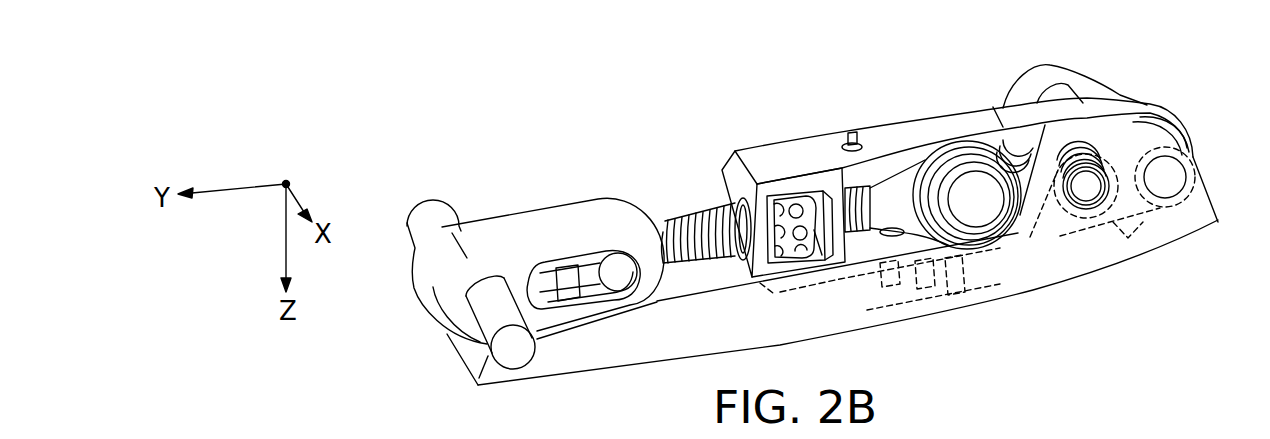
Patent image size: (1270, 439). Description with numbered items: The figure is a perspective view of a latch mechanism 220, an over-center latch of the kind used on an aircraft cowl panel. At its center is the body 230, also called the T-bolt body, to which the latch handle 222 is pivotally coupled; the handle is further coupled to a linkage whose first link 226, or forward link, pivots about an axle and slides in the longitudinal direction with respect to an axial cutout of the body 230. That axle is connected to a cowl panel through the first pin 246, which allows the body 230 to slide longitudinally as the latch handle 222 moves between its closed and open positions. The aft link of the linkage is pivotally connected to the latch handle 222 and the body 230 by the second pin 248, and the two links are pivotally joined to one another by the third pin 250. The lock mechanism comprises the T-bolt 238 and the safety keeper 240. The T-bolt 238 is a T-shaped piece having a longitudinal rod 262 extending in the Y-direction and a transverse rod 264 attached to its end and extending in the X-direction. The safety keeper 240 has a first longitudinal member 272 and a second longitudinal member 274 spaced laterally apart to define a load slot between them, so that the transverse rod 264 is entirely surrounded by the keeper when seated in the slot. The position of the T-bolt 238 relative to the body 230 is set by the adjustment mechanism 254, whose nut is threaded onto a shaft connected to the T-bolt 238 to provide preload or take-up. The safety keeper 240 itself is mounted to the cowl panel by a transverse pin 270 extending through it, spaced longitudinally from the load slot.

The latch mechanism 220 is at (803, 222).
The latch handle 222 is at (1037, 283).
The first link 226 is at (1017, 172).
The body 230 is at (818, 140).
The T-bolt 238 is at (663, 230).
The safety keeper 240 is at (527, 268).
The first pin 246 is at (970, 178).
The second pin 248 is at (1167, 168).
The third pin 250 is at (1093, 168).
The adjustment mechanism 254 is at (815, 262).
The longitudinal rod 262 is at (698, 208).
The transverse rod 264 is at (618, 263).
The transverse pin 270 is at (432, 212).
The first longitudinal member 272 is at (573, 247).
The second longitudinal member 274 is at (585, 312).